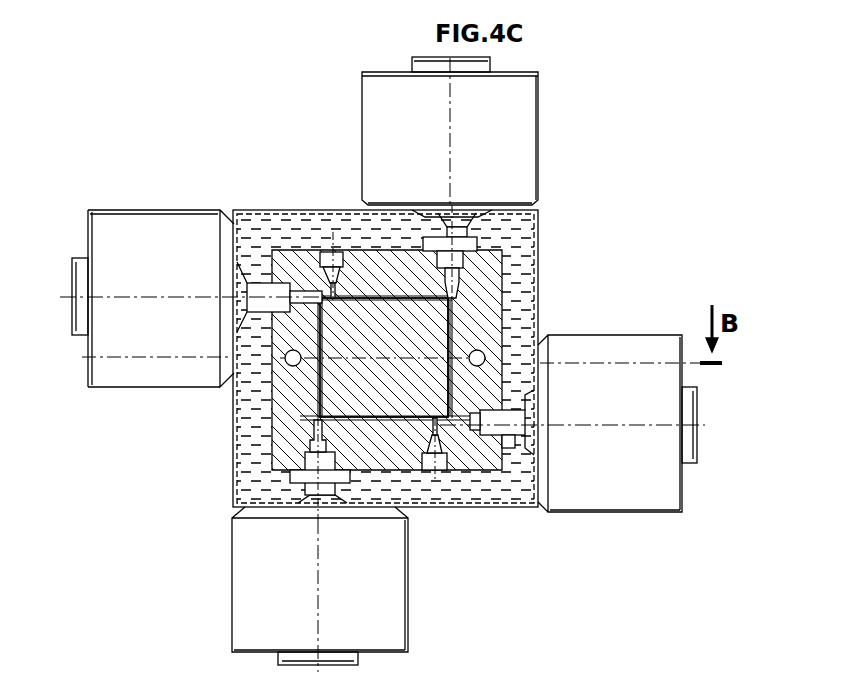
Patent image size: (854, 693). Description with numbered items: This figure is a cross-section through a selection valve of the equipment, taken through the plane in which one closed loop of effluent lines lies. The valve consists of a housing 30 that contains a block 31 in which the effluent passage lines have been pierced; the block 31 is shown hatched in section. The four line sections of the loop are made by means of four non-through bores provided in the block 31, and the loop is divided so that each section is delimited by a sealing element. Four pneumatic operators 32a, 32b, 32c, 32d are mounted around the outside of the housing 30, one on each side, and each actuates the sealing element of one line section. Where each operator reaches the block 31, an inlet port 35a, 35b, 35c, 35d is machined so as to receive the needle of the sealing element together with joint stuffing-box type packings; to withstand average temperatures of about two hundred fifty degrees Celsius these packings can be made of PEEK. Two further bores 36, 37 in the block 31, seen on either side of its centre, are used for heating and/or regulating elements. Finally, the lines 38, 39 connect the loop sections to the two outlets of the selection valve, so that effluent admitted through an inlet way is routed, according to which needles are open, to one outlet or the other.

The housing 30 is at (540, 262).
The block 31 is at (275, 407).
The pneumatic operator 32a is at (390, 88).
The pneumatic operator 32b is at (103, 243).
The pneumatic operator 32c is at (253, 614).
The pneumatic operator 32d is at (630, 497).
The inlet port 35a is at (305, 292).
The inlet port 35b is at (318, 440).
The inlet port 35c is at (455, 425).
The inlet port 35d is at (460, 295).
The bore 36 is at (481, 354).
The bore 37 is at (285, 360).
The line 38 is at (320, 358).
The line 39 is at (456, 348).